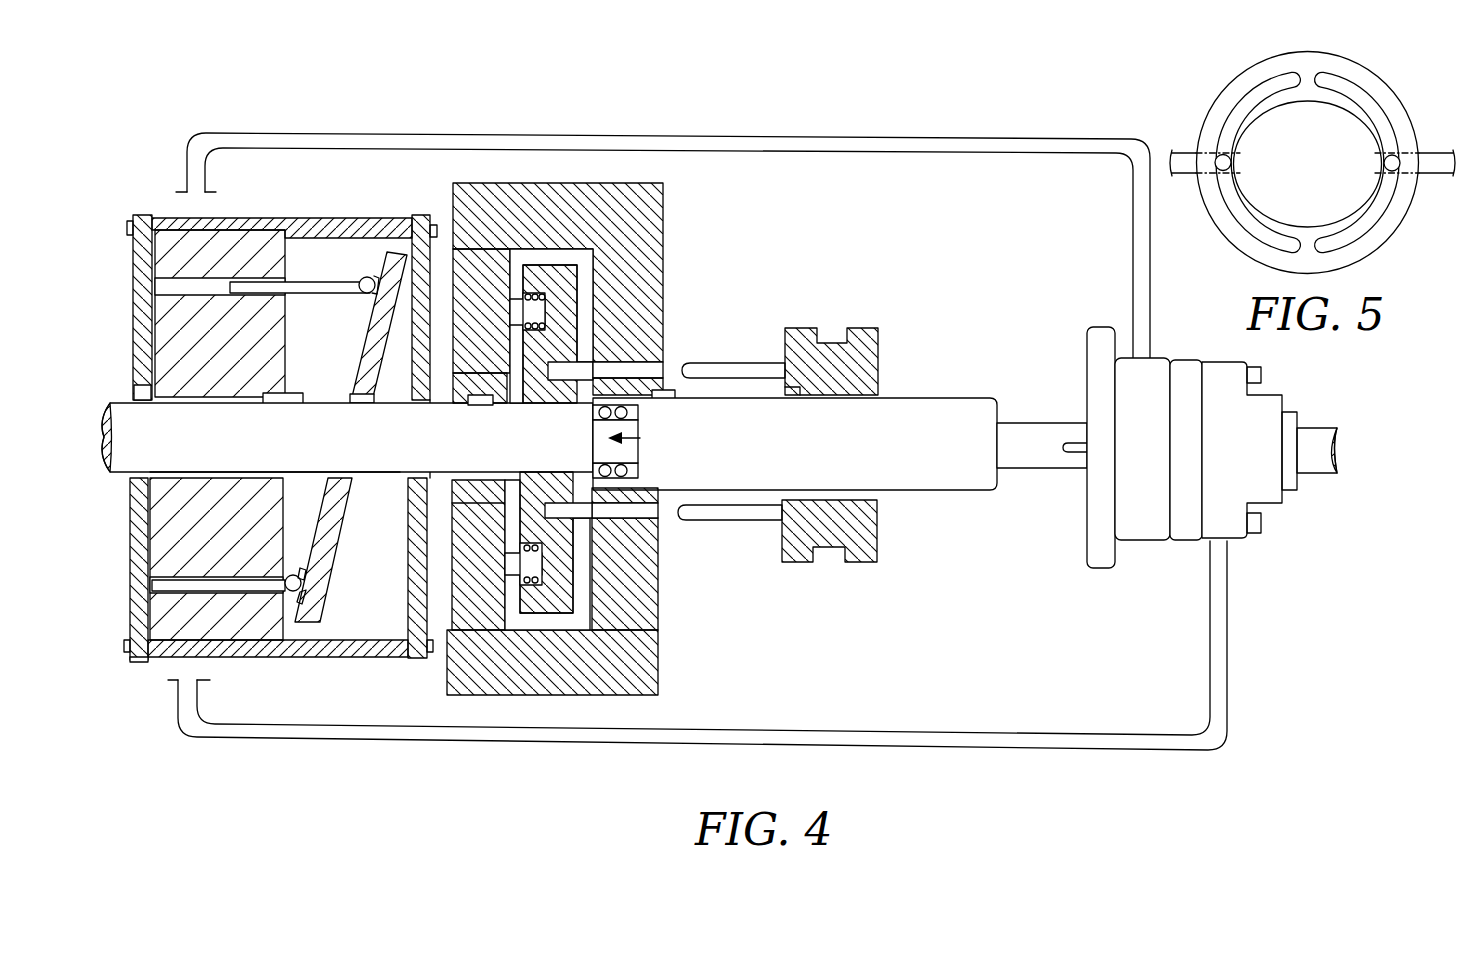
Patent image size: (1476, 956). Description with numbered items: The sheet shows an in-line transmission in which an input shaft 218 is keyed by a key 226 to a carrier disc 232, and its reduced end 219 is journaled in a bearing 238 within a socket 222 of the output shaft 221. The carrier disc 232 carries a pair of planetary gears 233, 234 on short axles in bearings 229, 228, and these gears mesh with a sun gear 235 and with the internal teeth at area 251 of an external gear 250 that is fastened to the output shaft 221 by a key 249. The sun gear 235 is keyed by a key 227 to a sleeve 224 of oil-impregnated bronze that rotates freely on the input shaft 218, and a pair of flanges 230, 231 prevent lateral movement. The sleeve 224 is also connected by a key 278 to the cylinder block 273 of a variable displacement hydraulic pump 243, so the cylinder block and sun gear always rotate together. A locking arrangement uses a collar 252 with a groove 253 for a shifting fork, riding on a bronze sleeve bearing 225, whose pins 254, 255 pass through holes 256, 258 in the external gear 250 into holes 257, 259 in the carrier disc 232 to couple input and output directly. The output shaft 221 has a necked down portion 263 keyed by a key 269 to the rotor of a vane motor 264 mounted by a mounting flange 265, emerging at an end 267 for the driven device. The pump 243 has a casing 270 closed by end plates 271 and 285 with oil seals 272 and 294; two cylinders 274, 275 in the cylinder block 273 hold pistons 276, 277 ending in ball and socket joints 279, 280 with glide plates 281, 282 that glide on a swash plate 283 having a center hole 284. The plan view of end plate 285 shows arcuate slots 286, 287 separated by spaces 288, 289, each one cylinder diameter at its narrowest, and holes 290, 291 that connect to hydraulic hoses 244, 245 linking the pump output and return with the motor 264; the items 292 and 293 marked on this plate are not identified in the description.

In FIG. 4, the input shaft 218 is at (170, 450).
In FIG. 4, the reduced end of input shaft 219 is at (642, 438).
In FIG. 4, the output shaft 221 is at (992, 380).
In FIG. 4, the socket 222 is at (640, 411).
In FIG. 4, the sleeve 224 is at (272, 451).
In FIG. 4, the bronze sleeve bearing 225 is at (879, 392).
In FIG. 4, the key 226 is at (596, 363).
In FIG. 4, the key 227 is at (486, 404).
In FIG. 4, the bearing 228 is at (584, 268).
In FIG. 4, the bearing 229 is at (543, 587).
In FIG. 4, the flange 230 is at (512, 486).
In FIG. 4, the flange 231 is at (132, 479).
In FIG. 4, the carrier disc 232 is at (567, 268).
In FIG. 4, the planetary gear 233 is at (470, 268).
In FIG. 4, the planetary gear 234 is at (480, 606).
In FIG. 4, the sun gear 235 is at (447, 694).
In FIG. 4, the bearing 238 is at (636, 479).
In FIG. 4, the variable displacement hydraulic pump 243 is at (233, 674).
In FIG. 4, the hydraulic hose 244 is at (1227, 592).
In FIG. 4, the hydraulic hose 245 is at (1060, 134).
In FIG. 5, the hydraulic hose 245 is at (1430, 166).
In FIG. 4, the key 249 is at (690, 391).
In FIG. 4, the external gear 250 is at (630, 640).
In FIG. 4, the internal gear teeth area 251 is at (541, 290).
In FIG. 4, the collar 252 is at (870, 530).
In FIG. 4, the groove 253 is at (833, 333).
In FIG. 4, the pin 254 is at (736, 516).
In FIG. 4, the pin 255 is at (763, 363).
In FIG. 4, the hole 256 is at (642, 514).
In FIG. 4, the hole 257 is at (566, 512).
In FIG. 4, the hole 258 is at (650, 370).
In FIG. 4, the hole 259 is at (546, 297).
In FIG. 4, the necked down portion 263 is at (1030, 430).
In FIG. 4, the vane motor 264 is at (1183, 515).
In FIG. 4, the mounting flange 265 is at (1100, 560).
In FIG. 4, the output end 267 is at (1340, 431).
In FIG. 4, the key 269 is at (1075, 453).
In FIG. 4, the casing 270 is at (163, 665).
In FIG. 4, the end plate 271 is at (413, 659).
In FIG. 4, the oil seal 272 is at (411, 481).
In FIG. 4, the cylinder block 273 is at (242, 248).
In FIG. 4, the cylinder 274 is at (178, 283).
In FIG. 4, the cylinder 275 is at (240, 600).
In FIG. 4, the piston 276 is at (318, 283).
In FIG. 4, the piston 277 is at (165, 592).
In FIG. 4, the key 278 is at (290, 395).
In FIG. 4, the ball and socket joint 279 is at (366, 279).
In FIG. 4, the ball and socket joint 280 is at (301, 585).
In FIG. 4, the glide plate 281 is at (386, 265).
In FIG. 4, the glide plate 282 is at (303, 572).
In FIG. 4, the swash plate 283 is at (312, 619).
In FIG. 4, the center hole 284 is at (357, 396).
In FIG. 4, the end plate 285 is at (142, 283).
In FIG. 5, the end plate 285 is at (1234, 232).
In FIG. 5, the arcuate slot 286 is at (1345, 90).
In FIG. 5, the arcuate slot 287 is at (1265, 90).
In FIG. 5, the space 288 is at (1311, 257).
In FIG. 5, the space 289 is at (1316, 80).
In FIG. 5, the hole 290 is at (1393, 172).
In FIG. 5, the hole 291 is at (1218, 156).
In FIG. 5, the ring portion 292 is at (1204, 184).
In FIG. 5, the ring portion 293 is at (1414, 132).
In FIG. 4, the oil seal 294 is at (135, 386).